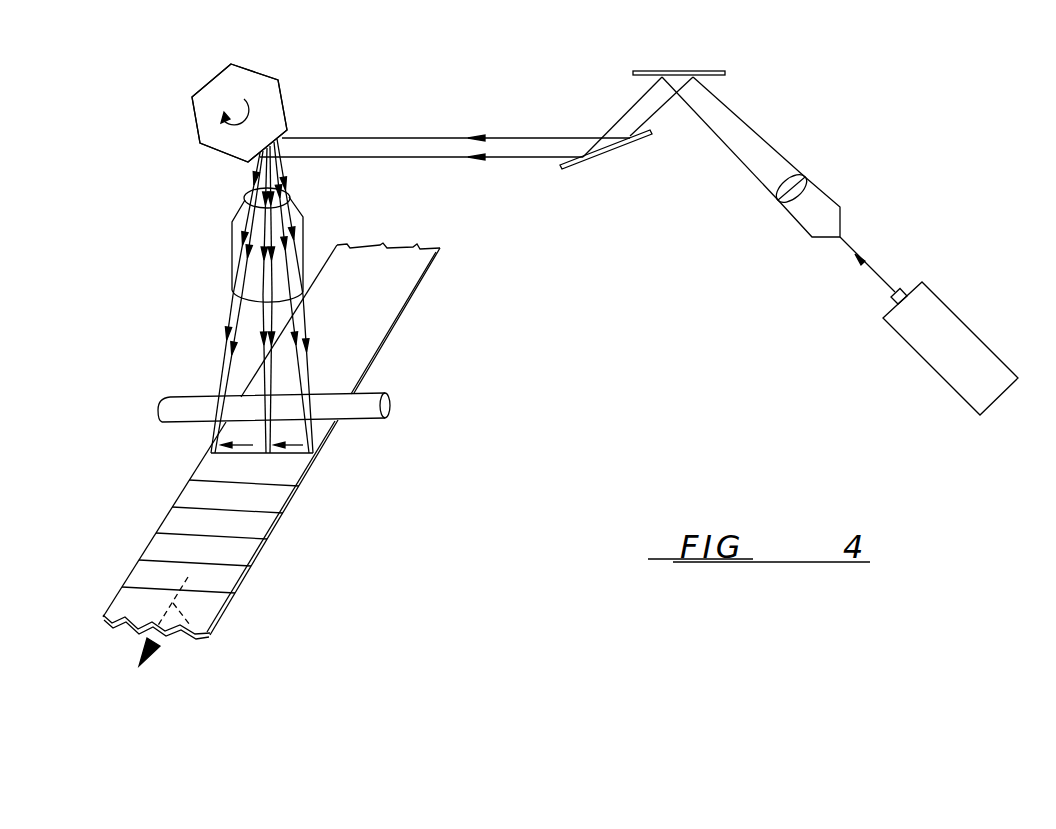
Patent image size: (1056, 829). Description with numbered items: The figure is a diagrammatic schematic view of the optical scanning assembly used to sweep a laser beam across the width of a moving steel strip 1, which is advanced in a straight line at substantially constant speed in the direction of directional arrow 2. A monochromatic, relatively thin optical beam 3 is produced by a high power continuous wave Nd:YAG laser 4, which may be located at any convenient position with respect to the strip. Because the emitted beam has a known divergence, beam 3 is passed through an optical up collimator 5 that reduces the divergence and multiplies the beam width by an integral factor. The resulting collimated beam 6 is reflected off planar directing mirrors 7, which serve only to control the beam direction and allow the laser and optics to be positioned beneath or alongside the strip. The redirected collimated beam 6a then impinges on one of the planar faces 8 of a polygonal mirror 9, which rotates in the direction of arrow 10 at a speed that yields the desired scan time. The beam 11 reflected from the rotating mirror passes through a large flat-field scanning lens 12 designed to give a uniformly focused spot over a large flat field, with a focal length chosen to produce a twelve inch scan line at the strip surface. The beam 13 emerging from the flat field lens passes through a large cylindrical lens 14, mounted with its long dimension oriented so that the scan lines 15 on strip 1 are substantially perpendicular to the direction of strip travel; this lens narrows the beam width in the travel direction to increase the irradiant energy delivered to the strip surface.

The steel strip 1 is at (415, 317).
The directional arrow 2 is at (195, 640).
The optical beam 3 is at (873, 268).
The laser 4 is at (970, 335).
The optical up collimator 5 is at (820, 198).
The collimated beam 6 is at (770, 158).
The redirected collimated beam 6a is at (508, 142).
The planar directing mirrors 7 is at (725, 72).
The planar faces 8 is at (283, 108).
The polygonal mirror 9 is at (263, 85).
The arrow 10 is at (247, 133).
The reflected beam 11 is at (257, 163).
The flat-field scanning lens 12 is at (232, 232).
The emerging beam 13 is at (227, 320).
The cylindrical lens 14 is at (177, 406).
The scan lines 15 is at (224, 464).